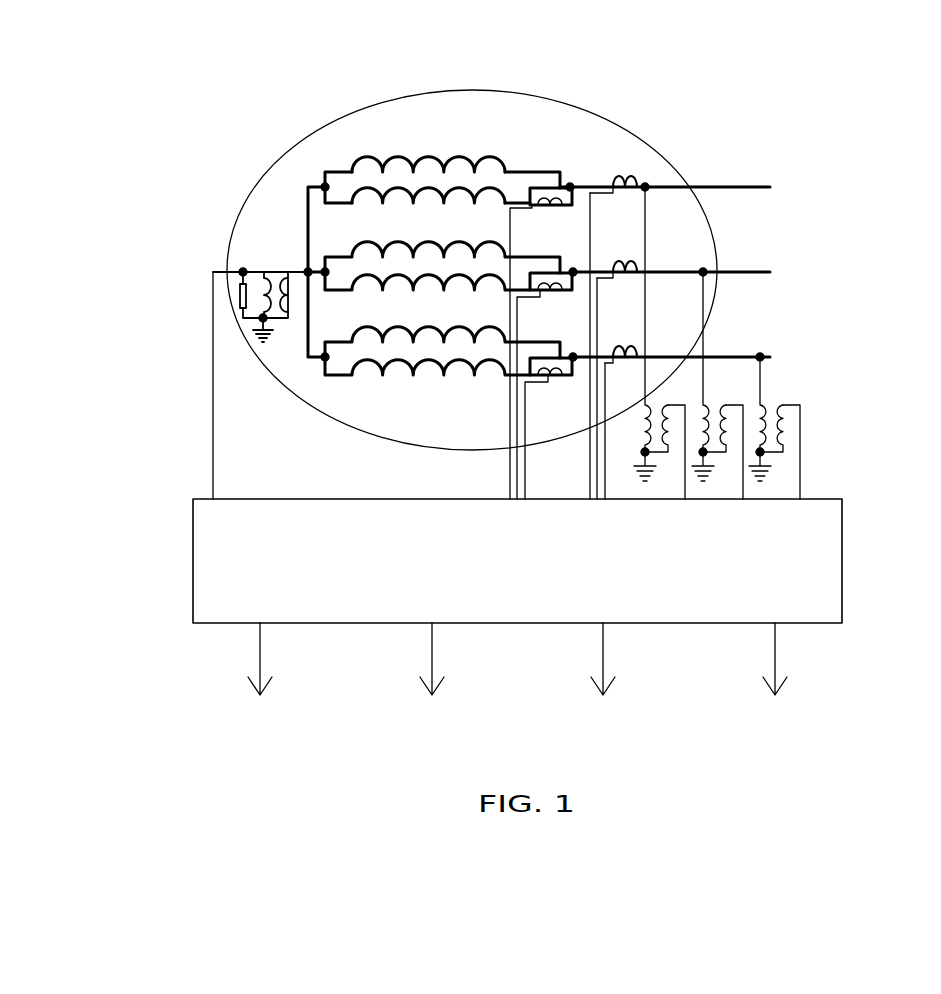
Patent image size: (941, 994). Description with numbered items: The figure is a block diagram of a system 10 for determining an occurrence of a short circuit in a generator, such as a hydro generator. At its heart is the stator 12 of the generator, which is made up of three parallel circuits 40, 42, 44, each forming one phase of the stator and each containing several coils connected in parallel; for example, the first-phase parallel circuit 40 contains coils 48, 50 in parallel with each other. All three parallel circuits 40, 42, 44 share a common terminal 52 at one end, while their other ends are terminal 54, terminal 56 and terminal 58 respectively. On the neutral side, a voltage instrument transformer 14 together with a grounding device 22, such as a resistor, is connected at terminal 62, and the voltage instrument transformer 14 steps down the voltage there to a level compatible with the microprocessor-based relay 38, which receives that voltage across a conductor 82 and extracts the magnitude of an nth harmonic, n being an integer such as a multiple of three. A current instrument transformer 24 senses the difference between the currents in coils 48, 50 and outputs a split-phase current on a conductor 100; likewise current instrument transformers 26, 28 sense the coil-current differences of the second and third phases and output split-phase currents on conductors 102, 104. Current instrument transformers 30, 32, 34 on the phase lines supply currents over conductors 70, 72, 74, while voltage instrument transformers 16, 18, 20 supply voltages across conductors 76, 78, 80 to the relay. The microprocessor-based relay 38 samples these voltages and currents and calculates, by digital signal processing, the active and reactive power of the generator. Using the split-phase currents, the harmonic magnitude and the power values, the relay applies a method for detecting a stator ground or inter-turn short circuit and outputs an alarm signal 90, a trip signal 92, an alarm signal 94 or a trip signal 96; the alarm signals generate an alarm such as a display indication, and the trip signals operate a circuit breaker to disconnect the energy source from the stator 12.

The system 10 is at (335, 748).
The stator 12 is at (662, 152).
The voltage instrument transformer 14 is at (233, 311).
The voltage instrument transformer 16 is at (777, 400).
The voltage instrument transformer 18 is at (718, 400).
The voltage instrument transformer 20 is at (640, 428).
The grounding device 22 is at (240, 298).
The current instrument transformer 24 is at (553, 219).
The current instrument transformer 26 is at (553, 304).
The current instrument transformer 28 is at (538, 386).
The current instrument transformer 30 is at (628, 171).
The current instrument transformer 32 is at (645, 266).
The current instrument transformer 34 is at (645, 351).
The microprocessor-based relay 38 is at (842, 568).
The parallel circuit 40 is at (406, 127).
The parallel circuit 42 is at (335, 240).
The parallel circuit 44 is at (333, 383).
The coil 48 is at (430, 156).
The coil 50 is at (487, 172).
The terminal 52 is at (307, 272).
The terminal 54 is at (571, 186).
The terminal 56 is at (575, 271).
The terminal 58 is at (575, 356).
The terminal 62 is at (243, 272).
The conductor 70 is at (590, 462).
The conductor 72 is at (597, 483).
The conductor 74 is at (605, 492).
The conductor 76 is at (685, 490).
The conductor 78 is at (743, 492).
The conductor 80 is at (800, 435).
The conductor 82 is at (213, 470).
The alarm signal 90 is at (260, 660).
The trip signal 92 is at (432, 660).
The alarm signal 94 is at (603, 660).
The trip signal 96 is at (775, 660).
The conductor 100 is at (510, 458).
The conductor 102 is at (517, 472).
The conductor 104 is at (525, 485).